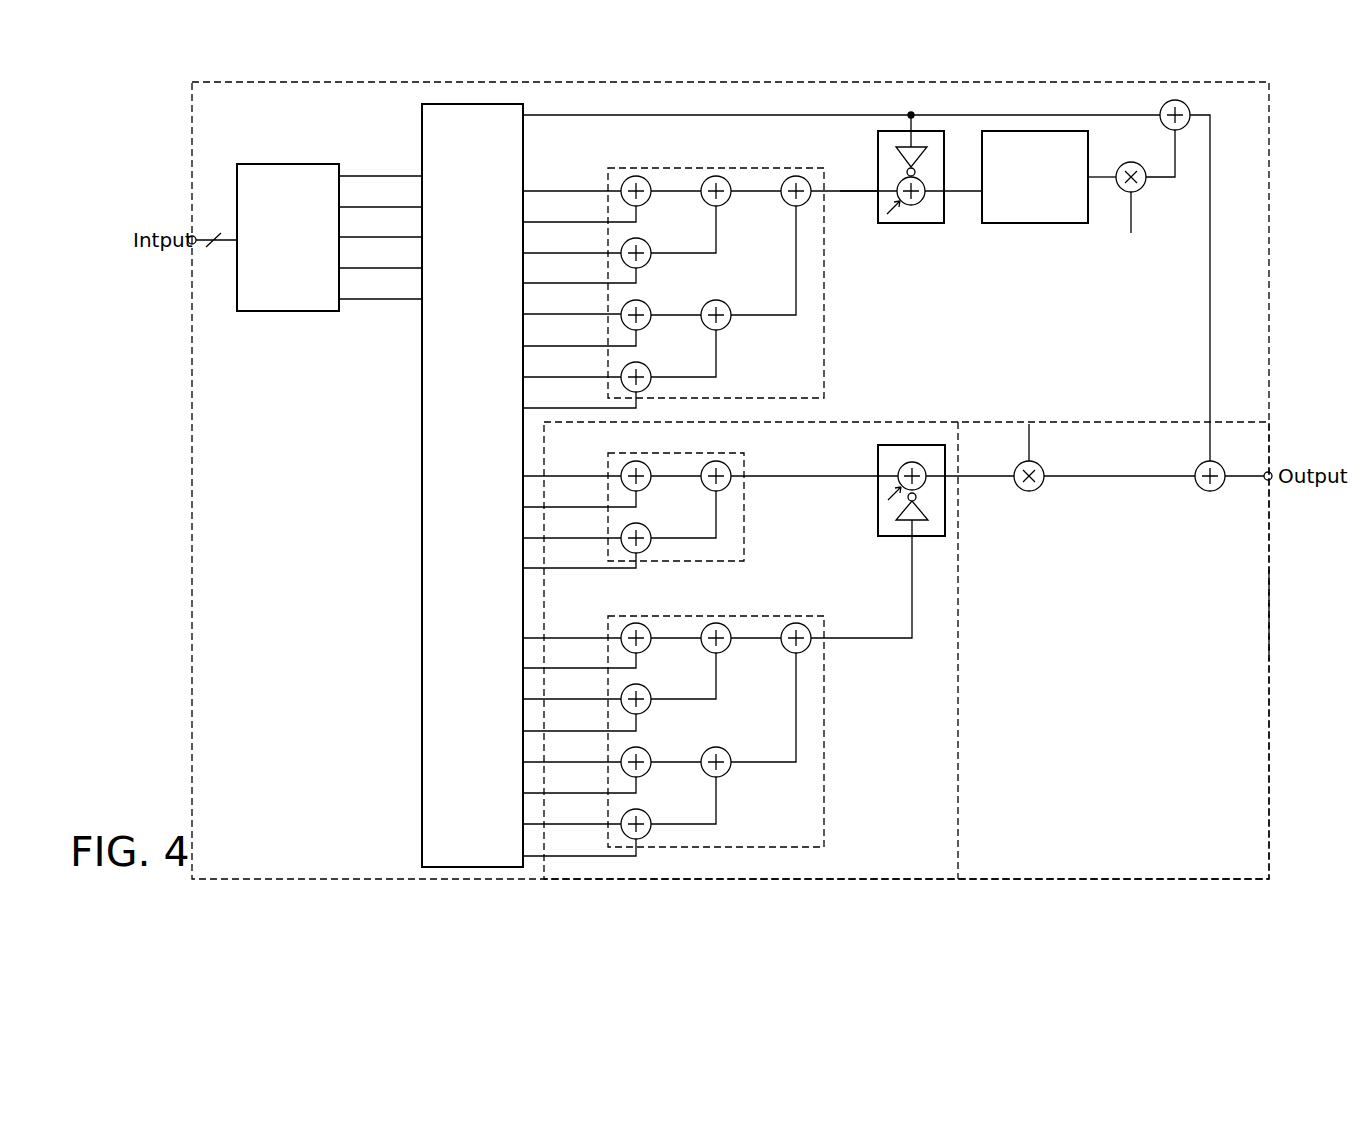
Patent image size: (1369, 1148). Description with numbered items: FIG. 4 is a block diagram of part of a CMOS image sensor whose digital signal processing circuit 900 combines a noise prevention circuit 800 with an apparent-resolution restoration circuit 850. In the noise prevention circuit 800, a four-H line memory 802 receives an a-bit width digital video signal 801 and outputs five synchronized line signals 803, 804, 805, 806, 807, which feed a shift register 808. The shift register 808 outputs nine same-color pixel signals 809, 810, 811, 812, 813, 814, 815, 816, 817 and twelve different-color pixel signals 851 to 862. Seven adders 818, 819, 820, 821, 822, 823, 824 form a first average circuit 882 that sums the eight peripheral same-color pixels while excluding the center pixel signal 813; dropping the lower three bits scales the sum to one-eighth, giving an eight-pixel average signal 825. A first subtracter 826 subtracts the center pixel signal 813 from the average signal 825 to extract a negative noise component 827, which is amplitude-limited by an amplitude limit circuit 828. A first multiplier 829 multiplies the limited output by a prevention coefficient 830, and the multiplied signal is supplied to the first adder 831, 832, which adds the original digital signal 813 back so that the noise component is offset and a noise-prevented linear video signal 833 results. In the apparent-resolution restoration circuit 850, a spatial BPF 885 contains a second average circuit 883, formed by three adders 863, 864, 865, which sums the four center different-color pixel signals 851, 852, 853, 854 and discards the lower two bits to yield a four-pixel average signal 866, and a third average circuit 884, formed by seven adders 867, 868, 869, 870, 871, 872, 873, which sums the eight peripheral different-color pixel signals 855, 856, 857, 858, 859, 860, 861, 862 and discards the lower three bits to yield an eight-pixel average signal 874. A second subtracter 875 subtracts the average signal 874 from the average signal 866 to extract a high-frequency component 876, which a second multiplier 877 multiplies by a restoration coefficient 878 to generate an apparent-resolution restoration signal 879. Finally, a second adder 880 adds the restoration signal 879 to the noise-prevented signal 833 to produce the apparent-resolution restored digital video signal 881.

The noise prevention circuit 800 is at (1257, 243).
The a-bit width digital video signal 801 is at (213, 254).
The 4H line memory 802 is at (288, 164).
The linear digital video signal 803 is at (345, 174).
The linear digital video signal 804 is at (345, 205).
The linear digital video signal 805 is at (345, 235).
The linear digital video signal 806 is at (345, 266).
The linear digital video signal 807 is at (345, 297).
The shift register 808 is at (422, 487).
The same-color pixel signal 809 is at (535, 190).
The same-color pixel signal 810 is at (535, 221).
The same-color pixel signal 811 is at (535, 252).
The same-color pixel signal 812 is at (535, 282).
The center pixel signal 813 is at (603, 115).
The same-color pixel signal 814 is at (535, 313).
The same-color pixel signal 815 is at (535, 345).
The same-color pixel signal 816 is at (535, 376).
The same-color pixel signal 817 is at (535, 407).
The adder 818 is at (636, 176).
The adder 819 is at (649, 240).
The adder 820 is at (649, 301).
The adder 821 is at (649, 363).
The adder 822 is at (716, 176).
The adder 823 is at (729, 301).
The adder 824 is at (796, 176).
The average signal 825 is at (852, 192).
The first subtracter 826 is at (913, 224).
The negative noise component 827 is at (963, 192).
The amplitude limit circuit 828 is at (1032, 224).
The first multiplier 829 is at (1142, 188).
The prevention coefficient 830 is at (1137, 227).
The first adder 831 is at (1175, 148).
The first adder 832 is at (1162, 110).
The noise-prevented linear video signal 833 is at (1210, 340).
The apparent-resolution restoration circuit 850 is at (1257, 754).
The different-color pixel signal 851 is at (535, 475).
The different-color pixel signal 852 is at (535, 506).
The different-color pixel signal 853 is at (535, 537).
The different-color pixel signal 854 is at (535, 567).
The different-color pixel signal 855 is at (535, 637).
The different-color pixel signal 856 is at (535, 667).
The different-color pixel signal 857 is at (535, 698).
The different-color pixel signal 858 is at (535, 730).
The different-color pixel signal 859 is at (535, 761).
The different-color pixel signal 860 is at (535, 792).
The different-color pixel signal 861 is at (535, 823).
The different-color pixel signal 862 is at (535, 855).
The adder 863 is at (643, 458).
The adder 864 is at (649, 521).
The adder 865 is at (724, 458).
The average signal 866 is at (810, 474).
The adder 867 is at (636, 621).
The adder 868 is at (649, 685).
The adder 869 is at (649, 746).
The adder 870 is at (649, 808).
The adder 871 is at (716, 621).
The adder 872 is at (729, 746).
The adder 873 is at (796, 621).
The average signal 874 is at (874, 637).
The second subtracter 875 is at (912, 444).
The high-frequency component 876 is at (981, 477).
The second multiplier 877 is at (1029, 492).
The restoration coefficient 878 is at (1029, 440).
The apparent-resolution restoration signal 879 is at (1138, 477).
The second adder 880 is at (1210, 492).
The apparent-resolution restored digital video signal 881 is at (1238, 475).
The first average circuit 882 is at (824, 326).
The second average circuit 883 is at (744, 516).
The third average circuit 884 is at (824, 740).
The spatial BPF 885 is at (958, 740).
The digital signal processing circuit 900 is at (1269, 612).